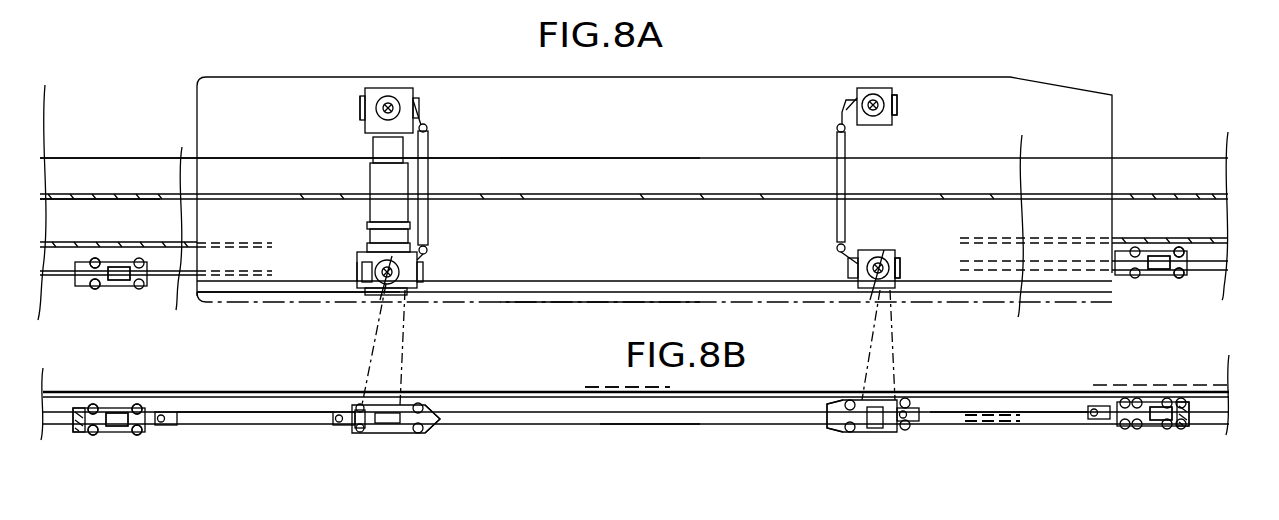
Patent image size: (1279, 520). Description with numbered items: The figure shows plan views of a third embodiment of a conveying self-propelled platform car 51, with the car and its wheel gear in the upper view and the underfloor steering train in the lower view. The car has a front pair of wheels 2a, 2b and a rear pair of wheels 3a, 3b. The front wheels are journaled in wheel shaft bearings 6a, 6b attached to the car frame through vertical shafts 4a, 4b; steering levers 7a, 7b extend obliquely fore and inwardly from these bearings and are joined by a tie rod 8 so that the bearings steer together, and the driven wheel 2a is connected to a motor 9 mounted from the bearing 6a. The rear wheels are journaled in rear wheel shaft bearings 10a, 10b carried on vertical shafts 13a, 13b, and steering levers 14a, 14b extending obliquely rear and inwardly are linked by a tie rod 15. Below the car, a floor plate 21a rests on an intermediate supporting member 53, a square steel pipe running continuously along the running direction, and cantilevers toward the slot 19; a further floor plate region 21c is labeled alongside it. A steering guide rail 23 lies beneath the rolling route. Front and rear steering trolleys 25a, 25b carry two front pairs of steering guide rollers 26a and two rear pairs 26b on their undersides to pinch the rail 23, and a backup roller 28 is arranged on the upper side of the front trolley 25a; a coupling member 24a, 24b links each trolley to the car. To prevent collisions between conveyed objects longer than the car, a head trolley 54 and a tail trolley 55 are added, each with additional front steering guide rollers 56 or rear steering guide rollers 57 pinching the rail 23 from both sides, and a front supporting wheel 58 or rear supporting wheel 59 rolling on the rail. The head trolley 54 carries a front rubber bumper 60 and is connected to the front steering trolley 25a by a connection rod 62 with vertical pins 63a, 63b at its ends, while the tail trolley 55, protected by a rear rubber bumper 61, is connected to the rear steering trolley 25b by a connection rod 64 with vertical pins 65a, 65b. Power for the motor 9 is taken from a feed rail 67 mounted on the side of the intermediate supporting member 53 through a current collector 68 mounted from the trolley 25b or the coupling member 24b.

In FIG. 8A, the front wheel 2a is at (353, 298).
In FIG. 8A, the front wheel 2b is at (368, 90).
In FIG. 8A, the rear wheel 3a is at (900, 276).
In FIG. 8A, the rear wheel 3b is at (890, 100).
In FIG. 8A, the vertical shaft 4a is at (418, 284).
In FIG. 8A, the vertical shaft 4b is at (392, 98).
In FIG. 8A, the wheel shaft bearing 6a is at (360, 264).
In FIG. 8A, the wheel shaft bearing 6b is at (365, 118).
In FIG. 8A, the steering lever 7a is at (428, 258).
In FIG. 8A, the steering lever 7b is at (428, 120).
In FIG. 8A, the tie rod 8 is at (430, 218).
In FIG. 8A, the motor 9 is at (382, 178).
In FIG. 8A, the rear wheel shaft bearing 10a is at (882, 258).
In FIG. 8A, the rear wheel shaft bearing 10b is at (889, 122).
In FIG. 8A, the vertical shaft 13a is at (864, 270).
In FIG. 8A, the vertical shaft 13b is at (872, 94).
In FIG. 8A, the steering lever 14a is at (838, 254).
In FIG. 8A, the steering lever 14b is at (838, 112).
In FIG. 8A, the tie rod 15 is at (836, 216).
In FIG. 8A, the slot 19 is at (296, 293).
In FIG. 8A, the floor plate 21a is at (600, 321).
In FIG. 8A, the panel surface 21c is at (579, 177).
In FIG. 8A, the steering guide rail 23 is at (170, 290).
In FIG. 8B, the steering guide rail 23 is at (650, 426).
In FIG. 8A, the left slider clamp 24a is at (392, 286).
In FIG. 8B, the left slider clamp 24a is at (398, 434).
In FIG. 8A, the coupling member 24b is at (880, 290).
In FIG. 8B, the coupling member 24b is at (880, 434).
In FIG. 8B, the front steering trolley 25a is at (441, 420).
In FIG. 8B, the rear steering trolley 25b is at (832, 422).
In FIG. 8B, the front steering guide rollers 26a is at (360, 404).
In FIG. 8B, the rear steering guide rollers 26b is at (908, 402).
In FIG. 8B, the backup roller 28 is at (405, 405).
In FIG. 8A, the conveying self-propelled platform car 51 is at (781, 72).
In FIG. 8A, the intermediate supporting member 53 is at (99, 195).
In FIG. 8A, the head trolley 54 is at (108, 288).
In FIG. 8B, the head trolley 54 is at (112, 433).
In FIG. 8A, the tail trolley 55 is at (1140, 280).
In FIG. 8B, the tail trolley 55 is at (1141, 430).
In FIG. 8A, the front steering guide rollers 56 is at (92, 280).
In FIG. 8B, the front steering guide rollers 56 is at (94, 428).
In FIG. 8A, the rear steering guide rollers 57 is at (1178, 272).
In FIG. 8B, the rear steering guide rollers 57 is at (1126, 422).
In FIG. 8A, the front supporting wheel 58 is at (124, 268).
In FIG. 8B, the front supporting wheel 58 is at (126, 432).
In FIG. 8A, the rear supporting wheel 59 is at (1150, 258).
In FIG. 8B, the rear supporting wheel 59 is at (1161, 429).
In FIG. 8B, the front rubber bumper 60 is at (77, 432).
In FIG. 8B, the rear rubber bumper 61 is at (1184, 428).
In FIG. 8B, the connection rod 62 is at (268, 426).
In FIG. 8B, the vertical pin 63a is at (166, 426).
In FIG. 8B, the vertical pin 63b is at (338, 427).
In FIG. 8B, the connection rod 64 is at (1043, 422).
In FIG. 8B, the vertical pin 65a is at (1101, 421).
In FIG. 8B, the vertical pin 65b is at (926, 421).
In FIG. 8B, the feed rail 67 is at (601, 395).
In FIG. 8B, the current collector 68 is at (873, 435).